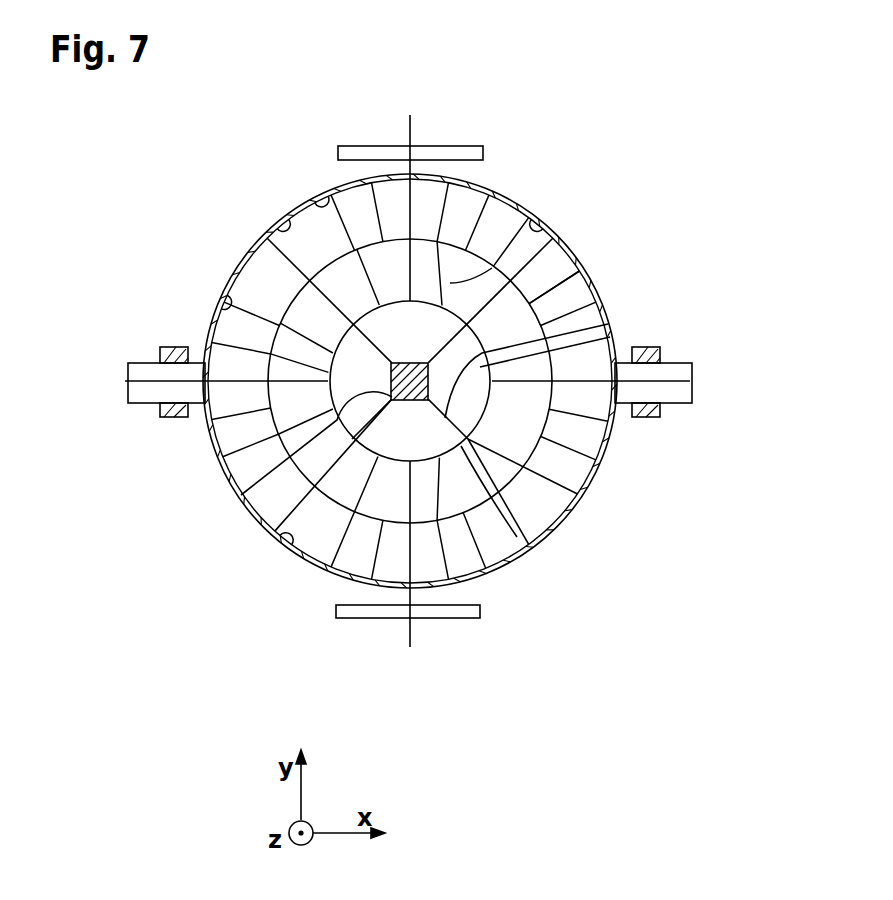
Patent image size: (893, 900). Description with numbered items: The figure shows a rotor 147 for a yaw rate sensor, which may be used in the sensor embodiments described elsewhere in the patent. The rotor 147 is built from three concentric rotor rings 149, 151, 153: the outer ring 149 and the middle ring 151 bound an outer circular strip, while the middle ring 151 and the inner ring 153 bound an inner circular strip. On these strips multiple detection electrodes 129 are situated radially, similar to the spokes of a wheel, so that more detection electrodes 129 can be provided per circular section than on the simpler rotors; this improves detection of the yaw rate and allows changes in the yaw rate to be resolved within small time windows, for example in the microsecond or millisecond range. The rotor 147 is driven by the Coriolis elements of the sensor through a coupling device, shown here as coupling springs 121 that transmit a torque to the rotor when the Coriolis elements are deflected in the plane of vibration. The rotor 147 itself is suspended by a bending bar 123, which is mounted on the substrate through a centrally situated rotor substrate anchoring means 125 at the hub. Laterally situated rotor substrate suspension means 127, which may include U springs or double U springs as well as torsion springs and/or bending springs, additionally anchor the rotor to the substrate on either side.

The coupling spring 121 is at (483, 152).
The bending bar 123 is at (607, 340).
The rotor substrate anchoring means 125 is at (246, 497).
The rotor substrate suspension means 127 is at (128, 380).
The detection electrode 129 is at (322, 200).
The rotor 147 is at (588, 266).
The rotor ring 149 is at (600, 470).
The rotor ring 151 is at (570, 497).
The rotor ring 153 is at (530, 545).